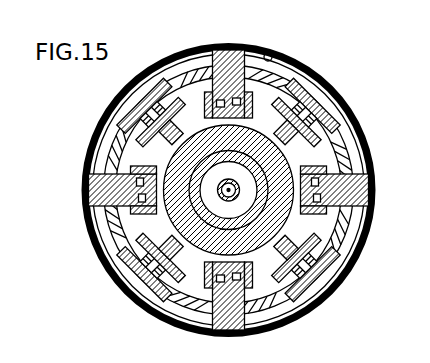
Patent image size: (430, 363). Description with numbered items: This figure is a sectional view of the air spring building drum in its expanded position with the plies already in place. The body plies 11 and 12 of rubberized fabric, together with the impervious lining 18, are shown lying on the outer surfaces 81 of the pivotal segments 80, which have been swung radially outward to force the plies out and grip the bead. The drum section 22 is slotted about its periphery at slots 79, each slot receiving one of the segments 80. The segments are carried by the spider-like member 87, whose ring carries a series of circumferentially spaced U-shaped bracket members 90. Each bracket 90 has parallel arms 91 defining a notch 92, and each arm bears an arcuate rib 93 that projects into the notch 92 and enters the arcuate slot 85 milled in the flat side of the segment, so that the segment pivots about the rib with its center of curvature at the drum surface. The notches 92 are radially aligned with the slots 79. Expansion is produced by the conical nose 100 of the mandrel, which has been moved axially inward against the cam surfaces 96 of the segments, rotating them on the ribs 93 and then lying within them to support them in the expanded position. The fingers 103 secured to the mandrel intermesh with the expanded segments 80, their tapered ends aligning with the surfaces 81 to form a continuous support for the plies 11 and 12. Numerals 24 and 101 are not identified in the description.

The ply 11 is at (357, 114).
The ply 12 is at (303, 67).
The impervious lining 18 is at (272, 54).
The drum section 22 is at (99, 262).
The rotor 24 is at (290, 140).
The slot 79 is at (163, 213).
The pivotal segment 80 is at (130, 301).
The outer surface 81 is at (251, 327).
The arcuate slot 85 is at (243, 118).
The spider-like member 87 is at (266, 99).
The bracket member 90 is at (358, 136).
The arm 91 is at (366, 160).
The notch 92 is at (365, 188).
The arcuate rib 93 is at (370, 176).
The cam surface 96 is at (208, 205).
The conical nose 100 is at (343, 225).
The pole flange 101 is at (160, 222).
The finger 103 is at (340, 268).